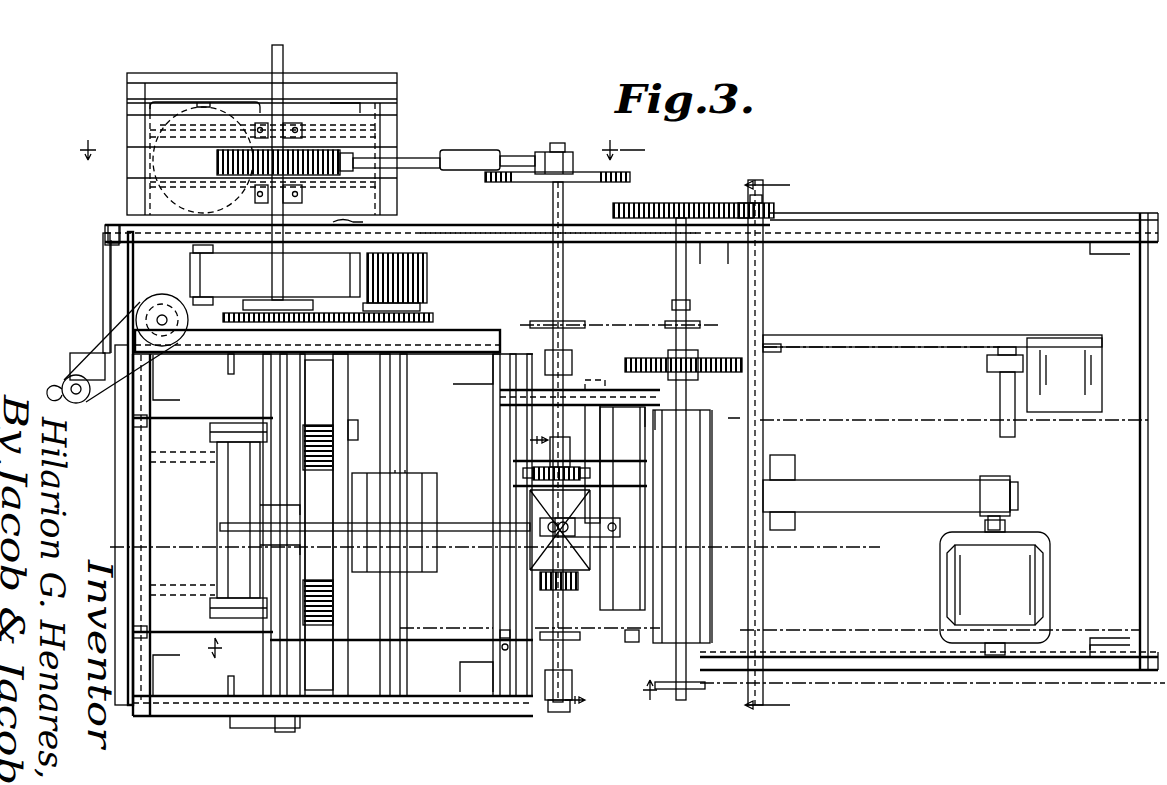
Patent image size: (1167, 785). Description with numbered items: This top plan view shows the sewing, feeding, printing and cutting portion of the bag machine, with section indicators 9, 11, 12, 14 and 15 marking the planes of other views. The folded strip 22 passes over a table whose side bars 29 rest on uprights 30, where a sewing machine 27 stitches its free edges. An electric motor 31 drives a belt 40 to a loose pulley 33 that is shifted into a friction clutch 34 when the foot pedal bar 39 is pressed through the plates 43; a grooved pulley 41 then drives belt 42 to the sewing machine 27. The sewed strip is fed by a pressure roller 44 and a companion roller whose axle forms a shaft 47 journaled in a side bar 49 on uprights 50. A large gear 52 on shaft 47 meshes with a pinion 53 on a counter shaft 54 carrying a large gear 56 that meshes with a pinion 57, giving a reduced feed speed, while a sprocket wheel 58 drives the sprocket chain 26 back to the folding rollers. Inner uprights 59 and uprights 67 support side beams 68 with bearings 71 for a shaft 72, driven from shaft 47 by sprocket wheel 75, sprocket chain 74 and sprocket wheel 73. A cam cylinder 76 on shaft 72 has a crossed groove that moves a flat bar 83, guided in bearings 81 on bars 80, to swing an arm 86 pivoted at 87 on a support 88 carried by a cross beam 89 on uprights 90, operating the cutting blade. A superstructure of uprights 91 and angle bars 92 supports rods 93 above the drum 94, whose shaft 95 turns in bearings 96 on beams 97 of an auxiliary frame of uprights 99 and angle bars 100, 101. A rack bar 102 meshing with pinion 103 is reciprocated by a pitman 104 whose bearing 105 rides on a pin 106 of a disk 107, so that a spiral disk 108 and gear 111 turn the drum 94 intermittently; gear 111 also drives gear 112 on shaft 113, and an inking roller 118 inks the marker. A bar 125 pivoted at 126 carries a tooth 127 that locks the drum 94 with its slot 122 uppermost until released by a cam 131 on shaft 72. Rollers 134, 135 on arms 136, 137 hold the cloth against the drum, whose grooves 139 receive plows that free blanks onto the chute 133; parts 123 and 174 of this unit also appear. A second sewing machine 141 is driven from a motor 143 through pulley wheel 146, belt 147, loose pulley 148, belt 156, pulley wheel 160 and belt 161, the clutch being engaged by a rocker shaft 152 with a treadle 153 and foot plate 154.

The section line 9 is at (491, 538).
The section line 11 is at (438, 673).
The section line 12 is at (363, 150).
The section line 14 is at (561, 582).
The section line 15 is at (767, 441).
The folded strip 22 is at (885, 428).
The sprocket chain 26 is at (884, 683).
The sewing machine 27 is at (1000, 385).
The side bars 29 is at (912, 228).
The uprights 30 is at (748, 422).
The electric motor 31 is at (960, 580).
The pulley 33 is at (780, 520).
The friction clutch 34 is at (778, 458).
The foot pedal bar 39 is at (835, 335).
The belt 40 is at (893, 488).
The grooved pulley 41 is at (775, 352).
The belt 42 is at (896, 347).
The plates 43 is at (1065, 412).
The pressure roller 44 is at (718, 598).
The shaft 47 is at (688, 305).
The side bar 49 is at (512, 240).
The uprights 50 is at (1128, 250).
The large gear 52 is at (640, 358).
The pinion 53 is at (690, 360).
The counter shaft 54 is at (676, 268).
The large gear 56 is at (695, 205).
The gear 57 is at (768, 206).
The sprocket wheel 58 is at (690, 689).
The inner uprights 59 is at (478, 380).
The uprights 67 is at (155, 392).
The side beams 68 is at (432, 352).
The bearings 71 is at (572, 365).
The shaft 72 is at (553, 278).
The sprocket wheel 73 is at (572, 320).
The sprocket chain 74 is at (625, 325).
The sprocket wheel 75 is at (695, 326).
The cam cylinder 76 is at (530, 520).
The bars 80 is at (533, 470).
The bearings 81 is at (523, 473).
The flat bar 83 is at (585, 450).
The arm 86 is at (540, 530).
The pivot 87 is at (620, 527).
The support 88 is at (630, 500).
The cross beam 89 is at (655, 440).
The uprights 90 is at (648, 420).
The uprights 91 is at (228, 368).
The angle bars 92 is at (234, 365).
The rods 93 is at (268, 706).
The drum 94 is at (217, 507).
The shaft 95 is at (280, 270).
The bearings 96 is at (302, 130).
The supporting beams 97 is at (365, 122).
The uprights 99 is at (160, 100).
The angle bars 100 is at (305, 76).
The angle bars 101 is at (103, 255).
The rack bar 102 is at (222, 158).
The pinion 103 is at (278, 70).
The pitman 104 is at (425, 152).
The bearing 105 is at (565, 152).
The pin 106 is at (553, 143).
The disk 107 is at (518, 180).
The disk 108 is at (177, 320).
The gear 111 is at (320, 313).
The gear 112 is at (420, 305).
The shaft 113 is at (358, 430).
The inking roller 118 is at (400, 473).
The slot 122 is at (305, 420).
The shaft 123 is at (280, 532).
The bar 125 is at (448, 632).
The pivot 126 is at (500, 630).
The tooth 127 is at (302, 526).
The cam 131 is at (575, 640).
The chute 133 is at (115, 450).
The roller 134 is at (210, 434).
The roller 135 is at (390, 400).
The arm 136 is at (190, 412).
The arm 137 is at (335, 430).
The grooves 139 is at (185, 450).
The sewing machine 141 is at (90, 398).
The motor 143 is at (215, 115).
The pulley wheel 146 is at (255, 275).
The belt 147 is at (253, 262).
The pulley 148 is at (427, 258).
The rocker shaft 152 is at (115, 228).
The treadle 153 is at (105, 284).
The foot plate 154 is at (70, 358).
The belt 156 is at (245, 300).
The pulley wheel 160 is at (110, 330).
The belt 161 is at (102, 345).
The drum end 174 is at (438, 471).